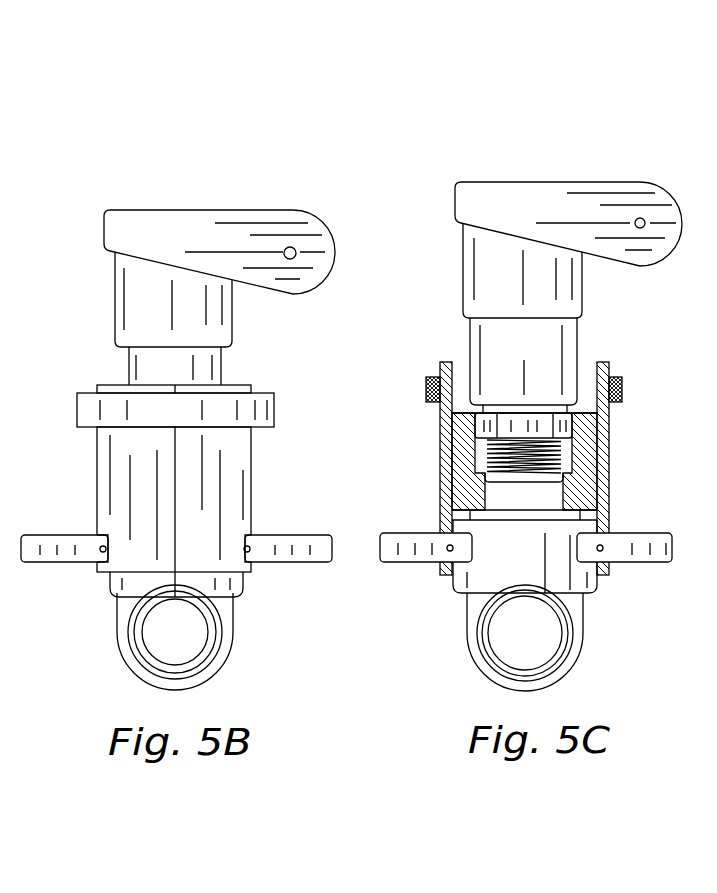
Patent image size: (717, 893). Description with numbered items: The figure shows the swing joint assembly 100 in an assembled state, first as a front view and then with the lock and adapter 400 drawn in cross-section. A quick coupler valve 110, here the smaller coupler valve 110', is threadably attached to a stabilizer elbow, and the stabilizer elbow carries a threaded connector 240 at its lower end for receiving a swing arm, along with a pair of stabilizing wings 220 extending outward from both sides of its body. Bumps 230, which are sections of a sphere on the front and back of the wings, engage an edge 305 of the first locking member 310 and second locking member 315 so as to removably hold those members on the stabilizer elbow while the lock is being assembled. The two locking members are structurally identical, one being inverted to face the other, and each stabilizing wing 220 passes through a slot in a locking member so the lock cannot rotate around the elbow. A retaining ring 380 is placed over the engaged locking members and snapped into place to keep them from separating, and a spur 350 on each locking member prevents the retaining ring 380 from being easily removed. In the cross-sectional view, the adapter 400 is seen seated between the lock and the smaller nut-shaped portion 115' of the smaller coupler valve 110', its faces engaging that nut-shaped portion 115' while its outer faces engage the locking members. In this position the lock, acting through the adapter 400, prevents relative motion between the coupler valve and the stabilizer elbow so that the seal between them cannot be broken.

In FIG. 5B, the swing joint assembly 100 is at (50, 121).
In FIG. 5C, the swing joint assembly 100 is at (388, 121).
In FIG. 5B, the quick coupler valve 110 is at (190, 297).
In FIG. 5C, the smaller coupler valve 110' is at (538, 297).
In FIG. 5C, the nut-shaped portion 115' is at (570, 398).
In FIG. 5B, the stabilizing wing 220 is at (52, 562).
In FIG. 5C, the stabilizing wing 220 is at (418, 562).
In FIG. 5B, the bumps 230 is at (95, 562).
In FIG. 5C, the bumps 230 is at (603, 548).
In FIG. 5B, the threaded connector 240 is at (232, 665).
In FIG. 5B, the edge 305 is at (108, 540).
In FIG. 5B, the first locking member 310 is at (251, 480).
In FIG. 5C, the first locking member 310 is at (609, 485).
In FIG. 5B, the second locking member 315 is at (98, 480).
In FIG. 5C, the second locking member 315 is at (440, 500).
In FIG. 5B, the spur 350 is at (97, 388).
In FIG. 5B, the retaining ring 380 is at (274, 408).
In FIG. 5C, the retaining ring 380 is at (622, 388).
In FIG. 5C, the adapter 400 is at (455, 452).